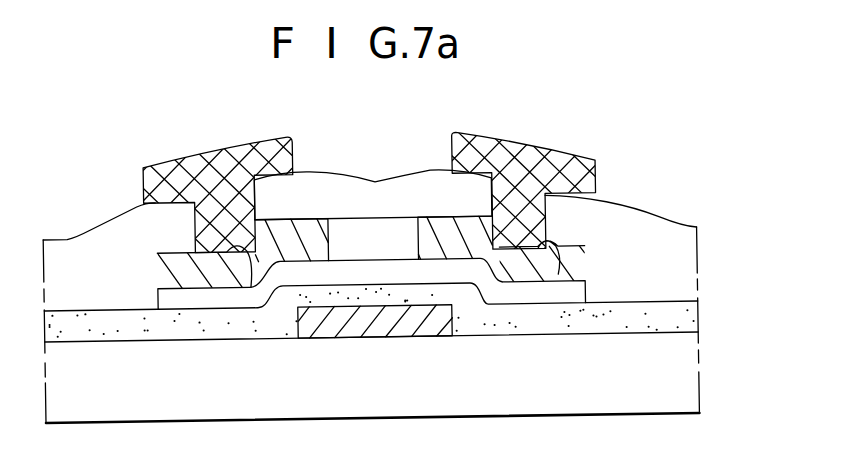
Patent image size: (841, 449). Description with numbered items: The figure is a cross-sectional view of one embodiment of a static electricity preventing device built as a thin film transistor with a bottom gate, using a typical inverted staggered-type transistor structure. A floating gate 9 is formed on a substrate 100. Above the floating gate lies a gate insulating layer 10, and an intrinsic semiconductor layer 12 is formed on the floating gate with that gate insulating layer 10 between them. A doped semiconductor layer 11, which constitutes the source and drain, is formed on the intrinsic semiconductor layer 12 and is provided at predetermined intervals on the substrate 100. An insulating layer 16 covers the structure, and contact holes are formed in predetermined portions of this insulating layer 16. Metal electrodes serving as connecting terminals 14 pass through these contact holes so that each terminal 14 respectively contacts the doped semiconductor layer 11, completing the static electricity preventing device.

The floating gate 9 is at (384, 315).
The gate insulating layer 10 is at (686, 326).
The doped semiconductor layer 11 is at (590, 270).
The intrinsic semiconductor layer 12 is at (577, 300).
The connecting terminals 14 is at (532, 169).
The insulating layer 16 is at (382, 195).
The substrate 100 is at (687, 378).